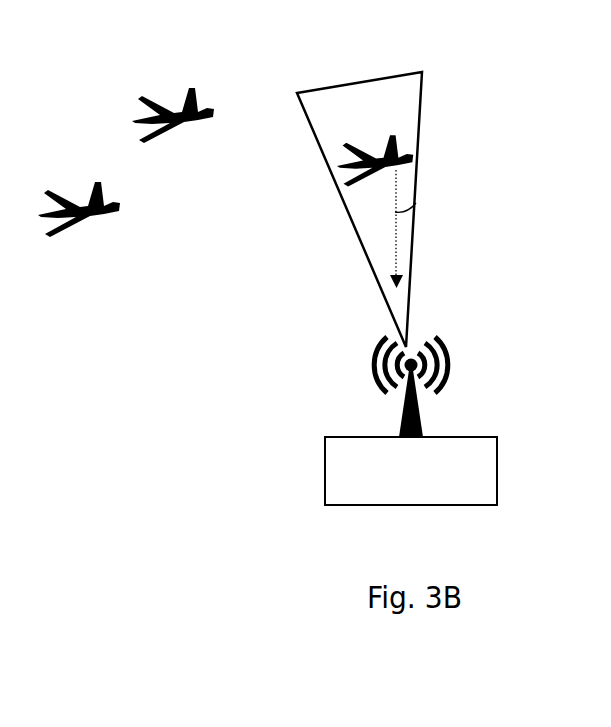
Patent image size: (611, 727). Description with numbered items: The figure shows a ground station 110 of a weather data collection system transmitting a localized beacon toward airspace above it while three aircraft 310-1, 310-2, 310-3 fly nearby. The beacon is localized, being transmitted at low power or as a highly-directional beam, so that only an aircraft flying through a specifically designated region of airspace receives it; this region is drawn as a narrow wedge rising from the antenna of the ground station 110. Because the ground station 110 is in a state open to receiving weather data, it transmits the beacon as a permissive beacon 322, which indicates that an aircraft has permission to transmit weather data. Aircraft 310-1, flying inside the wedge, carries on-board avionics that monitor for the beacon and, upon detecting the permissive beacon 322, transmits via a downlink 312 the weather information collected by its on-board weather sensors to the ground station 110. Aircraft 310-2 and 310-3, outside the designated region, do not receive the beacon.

The permissive beacon 322 is at (422, 81).
The aircraft 310-1 is at (400, 155).
The aircraft 310-2 is at (205, 113).
The aircraft 310-3 is at (102, 215).
The downlink 312 is at (412, 207).
The ground station 110 is at (538, 448).